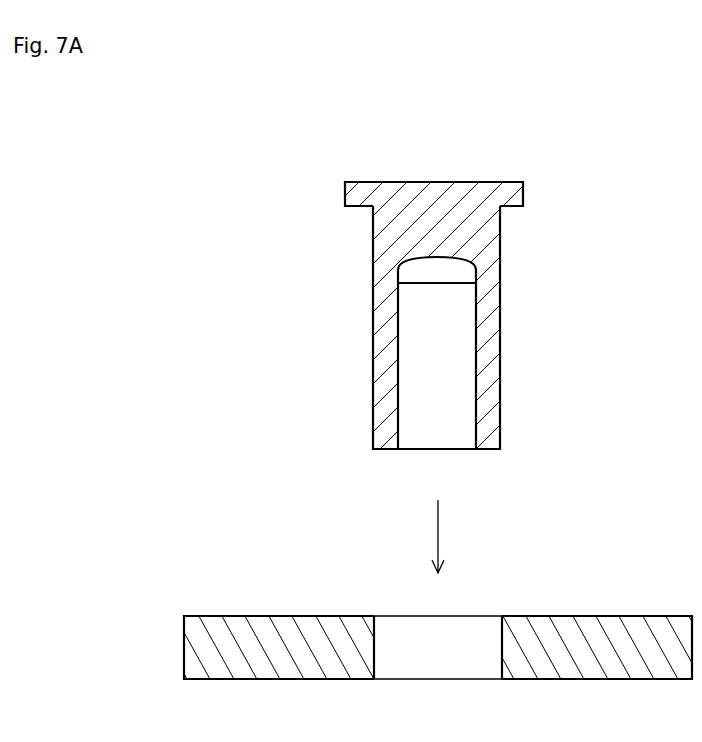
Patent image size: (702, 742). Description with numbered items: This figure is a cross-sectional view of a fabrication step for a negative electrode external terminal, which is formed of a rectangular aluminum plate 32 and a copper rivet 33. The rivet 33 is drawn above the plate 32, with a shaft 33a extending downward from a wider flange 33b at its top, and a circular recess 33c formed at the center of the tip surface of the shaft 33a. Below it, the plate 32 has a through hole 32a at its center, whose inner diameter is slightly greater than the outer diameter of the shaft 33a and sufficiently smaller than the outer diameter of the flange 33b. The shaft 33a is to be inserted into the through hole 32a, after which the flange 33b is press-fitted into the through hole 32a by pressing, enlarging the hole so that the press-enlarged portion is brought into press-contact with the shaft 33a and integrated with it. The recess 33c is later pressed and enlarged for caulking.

The rivet 33 is at (501, 299).
The shaft 33a is at (501, 379).
The flange 33b is at (518, 195).
The recess 33c is at (398, 408).
The aluminum plate 32 is at (627, 620).
The through hole 32a is at (503, 617).